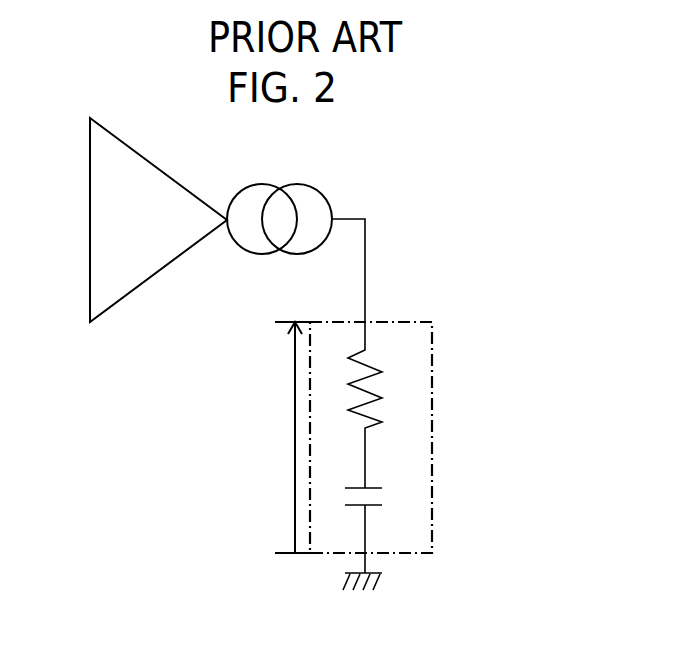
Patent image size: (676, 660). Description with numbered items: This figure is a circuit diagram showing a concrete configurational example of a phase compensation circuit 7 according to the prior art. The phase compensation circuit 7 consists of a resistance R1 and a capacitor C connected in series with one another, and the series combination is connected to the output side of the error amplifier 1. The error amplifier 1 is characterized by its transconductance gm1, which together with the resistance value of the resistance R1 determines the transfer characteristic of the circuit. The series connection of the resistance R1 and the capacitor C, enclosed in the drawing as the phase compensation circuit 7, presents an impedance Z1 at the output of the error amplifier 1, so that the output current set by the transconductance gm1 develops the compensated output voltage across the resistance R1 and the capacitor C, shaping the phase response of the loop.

The error amplifier 1 is at (227, 220).
The phase compensation circuit 7 is at (383, 444).
The transconductance gm1 is at (139, 222).
The resistance R1 is at (349, 396).
The capacitor C is at (351, 511).
The load impedance Z1 is at (278, 437).